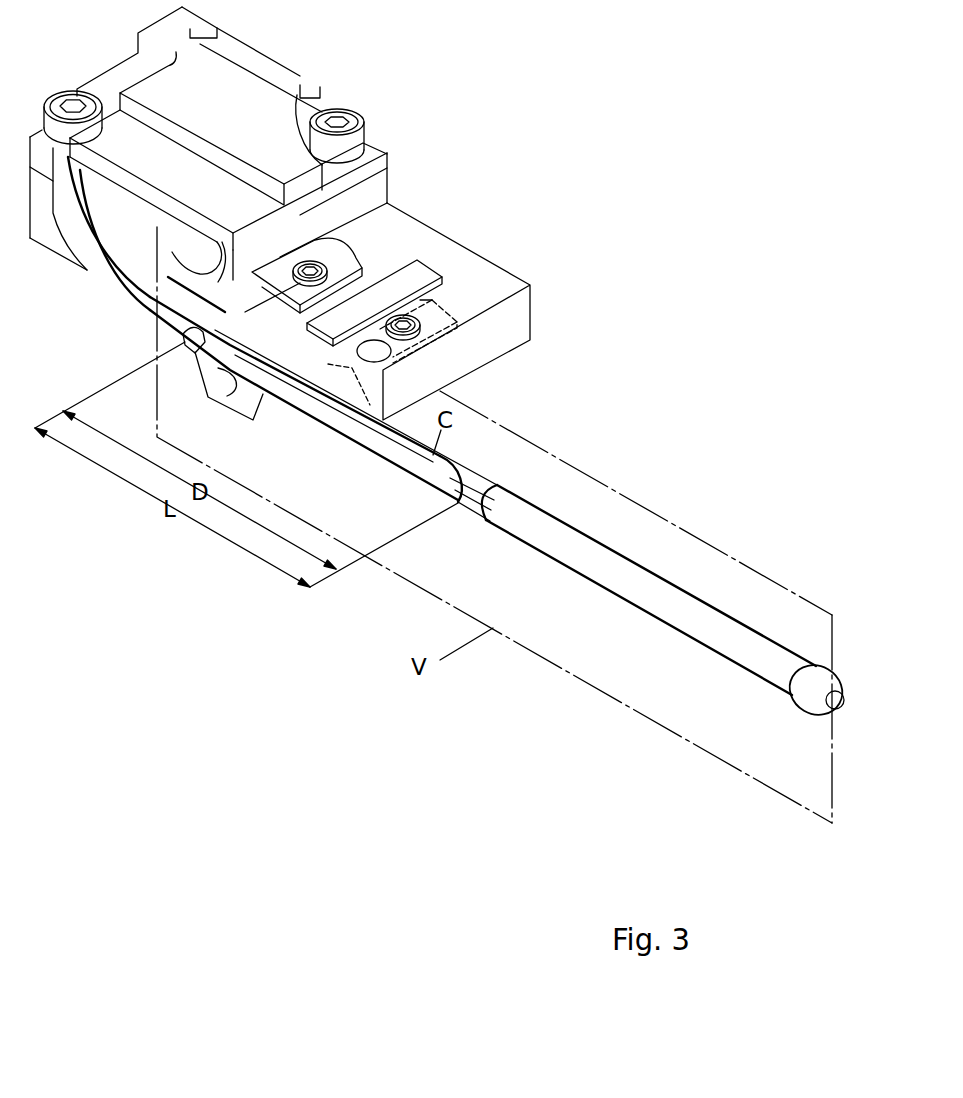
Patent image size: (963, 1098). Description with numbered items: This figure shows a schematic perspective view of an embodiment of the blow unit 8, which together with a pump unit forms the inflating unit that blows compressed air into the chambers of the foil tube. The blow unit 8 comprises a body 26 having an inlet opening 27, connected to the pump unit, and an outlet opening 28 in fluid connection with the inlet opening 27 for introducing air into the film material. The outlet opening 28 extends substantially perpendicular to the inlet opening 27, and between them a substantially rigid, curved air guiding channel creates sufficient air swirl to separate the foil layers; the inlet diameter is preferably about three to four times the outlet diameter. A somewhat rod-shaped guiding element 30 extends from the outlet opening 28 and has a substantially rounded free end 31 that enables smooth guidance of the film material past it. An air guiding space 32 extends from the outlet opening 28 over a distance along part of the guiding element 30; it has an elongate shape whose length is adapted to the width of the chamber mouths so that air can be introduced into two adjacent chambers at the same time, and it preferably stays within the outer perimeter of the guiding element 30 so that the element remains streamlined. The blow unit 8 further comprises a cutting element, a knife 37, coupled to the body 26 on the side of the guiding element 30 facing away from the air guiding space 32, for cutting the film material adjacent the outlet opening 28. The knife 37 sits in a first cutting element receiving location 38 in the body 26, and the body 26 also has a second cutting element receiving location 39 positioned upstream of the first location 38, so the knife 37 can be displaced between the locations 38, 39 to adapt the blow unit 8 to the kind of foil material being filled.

The blow unit 8 is at (423, 155).
The body 26 is at (492, 340).
The inlet opening 27 is at (263, 58).
The outlet opening 28 is at (198, 338).
The guiding element 30 is at (638, 585).
The free end 31 is at (817, 688).
The air guiding space 32 is at (402, 450).
The knife 37 is at (330, 255).
The first cutting element receiving location 38 is at (360, 257).
The second cutting element receiving location 39 is at (457, 308).